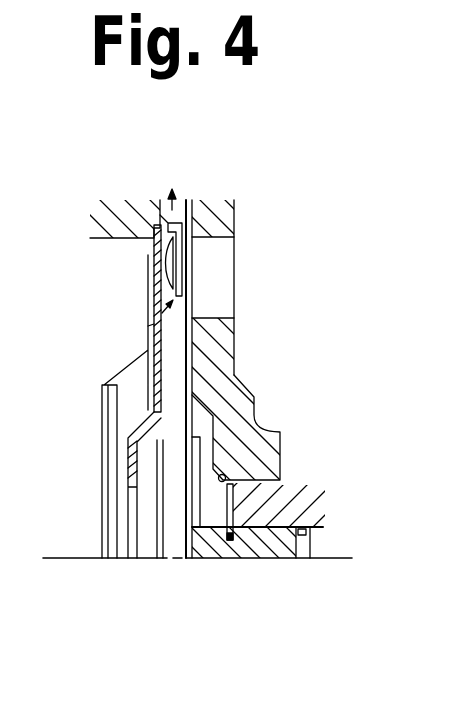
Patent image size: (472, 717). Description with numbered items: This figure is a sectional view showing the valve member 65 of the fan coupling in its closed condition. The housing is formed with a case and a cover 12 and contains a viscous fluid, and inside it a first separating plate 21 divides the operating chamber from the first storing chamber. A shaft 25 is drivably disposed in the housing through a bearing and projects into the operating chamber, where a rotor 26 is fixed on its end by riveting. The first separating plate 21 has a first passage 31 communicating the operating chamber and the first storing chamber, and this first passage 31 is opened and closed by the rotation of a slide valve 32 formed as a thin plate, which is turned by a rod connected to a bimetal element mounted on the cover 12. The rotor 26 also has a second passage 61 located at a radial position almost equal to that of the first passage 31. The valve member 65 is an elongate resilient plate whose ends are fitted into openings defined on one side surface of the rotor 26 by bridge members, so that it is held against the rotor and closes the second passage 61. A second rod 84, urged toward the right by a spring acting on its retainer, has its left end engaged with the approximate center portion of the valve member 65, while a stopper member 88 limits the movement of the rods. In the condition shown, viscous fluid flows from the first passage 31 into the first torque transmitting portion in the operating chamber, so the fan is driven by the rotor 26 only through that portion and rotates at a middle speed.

The cover 12 is at (122, 212).
The first separating plate 21 is at (128, 448).
The shaft 25 is at (290, 505).
The rotor 26 is at (240, 420).
The first passage 31 is at (156, 292).
The slide valve 32 is at (125, 368).
The second passage 61 is at (220, 296).
The valve member 65 is at (187, 430).
The second rod 84 is at (277, 544).
The stopper member 88 is at (229, 541).